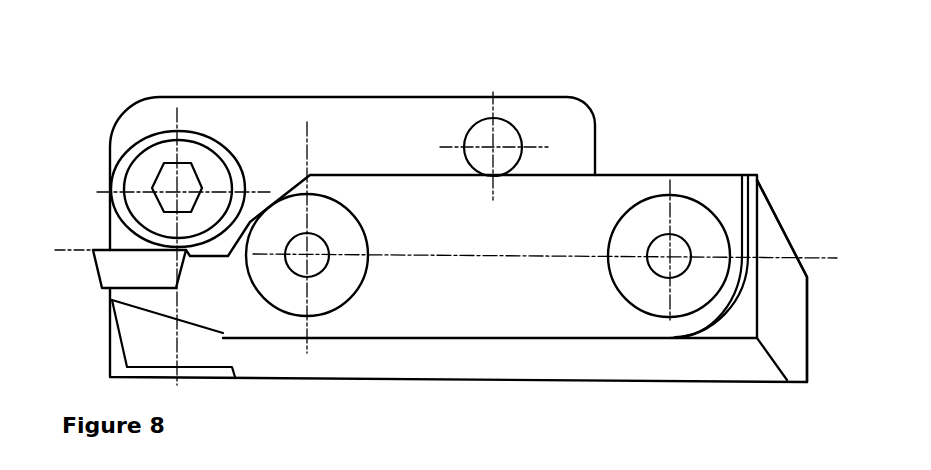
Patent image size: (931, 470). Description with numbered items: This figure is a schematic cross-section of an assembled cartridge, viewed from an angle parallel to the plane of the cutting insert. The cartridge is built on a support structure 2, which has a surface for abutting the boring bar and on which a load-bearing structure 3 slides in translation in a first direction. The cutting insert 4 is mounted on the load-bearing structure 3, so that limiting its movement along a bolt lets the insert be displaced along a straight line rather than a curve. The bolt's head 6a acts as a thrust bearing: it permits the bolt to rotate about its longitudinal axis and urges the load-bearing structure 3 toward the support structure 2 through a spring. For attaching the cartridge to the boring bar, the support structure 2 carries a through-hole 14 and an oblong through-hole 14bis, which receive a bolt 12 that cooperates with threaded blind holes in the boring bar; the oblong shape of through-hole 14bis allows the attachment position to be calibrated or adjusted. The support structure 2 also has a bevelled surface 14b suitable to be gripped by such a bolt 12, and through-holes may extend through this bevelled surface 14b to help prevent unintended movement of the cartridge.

The support structure 2 is at (280, 122).
The load-bearing structure 3 is at (560, 233).
The cutting insert 4 is at (125, 267).
The head 6a is at (327, 277).
The bolt 12 is at (150, 168).
The through-hole 14 is at (513, 128).
The oblong through-hole 14bis is at (164, 128).
The bevelled surface 14b is at (780, 322).